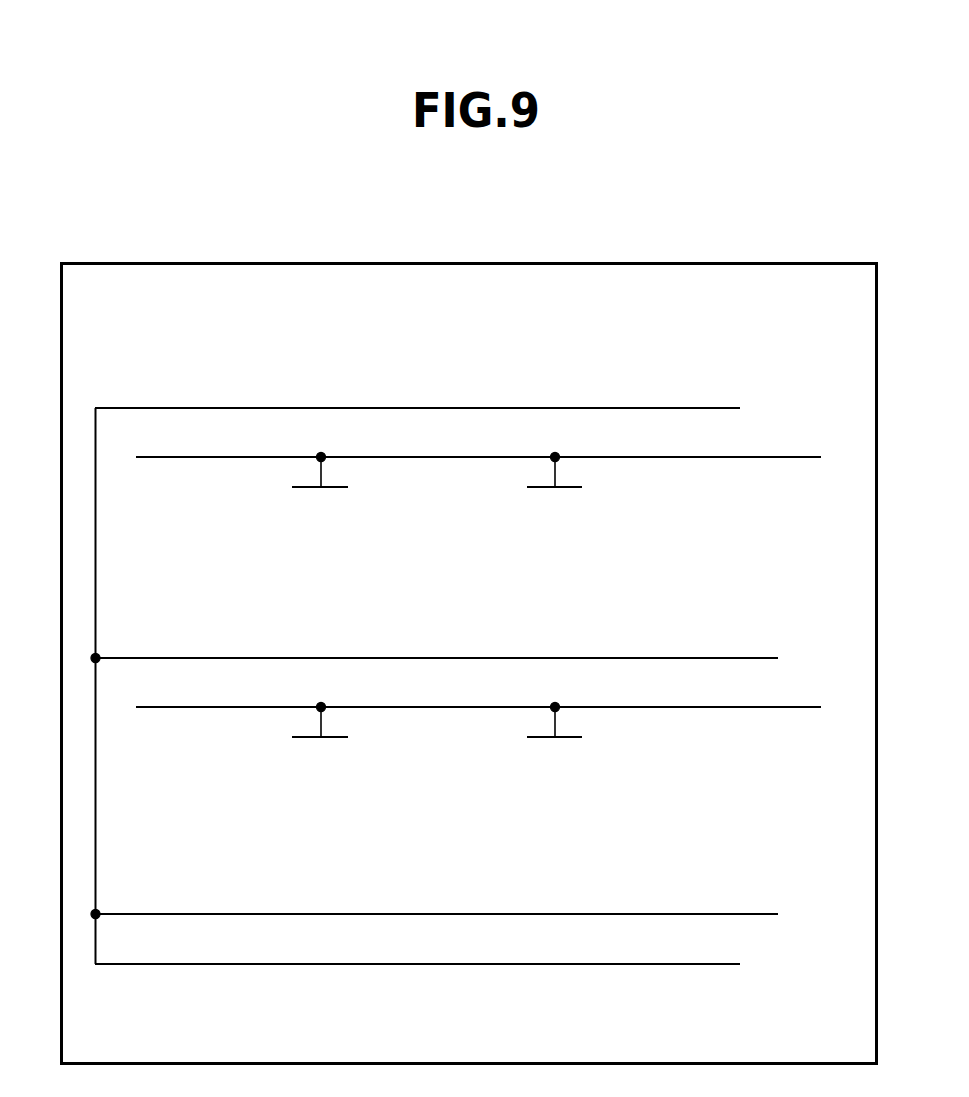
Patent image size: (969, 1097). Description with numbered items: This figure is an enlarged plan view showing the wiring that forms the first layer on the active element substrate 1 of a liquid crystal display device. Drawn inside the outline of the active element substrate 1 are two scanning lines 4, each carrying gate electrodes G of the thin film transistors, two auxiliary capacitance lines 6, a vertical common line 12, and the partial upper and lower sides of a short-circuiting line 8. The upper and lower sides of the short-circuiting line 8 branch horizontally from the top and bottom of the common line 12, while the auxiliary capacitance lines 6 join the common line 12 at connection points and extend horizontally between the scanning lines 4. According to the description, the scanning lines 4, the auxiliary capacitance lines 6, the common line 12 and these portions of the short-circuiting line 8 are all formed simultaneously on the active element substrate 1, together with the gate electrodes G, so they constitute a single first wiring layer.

The active element substrate 1 is at (712, 256).
The scanning lines 4 is at (767, 458).
The auxiliary capacitance lines 6 is at (250, 656).
The short-circuiting line 8 is at (424, 407).
The common line 12 is at (97, 581).